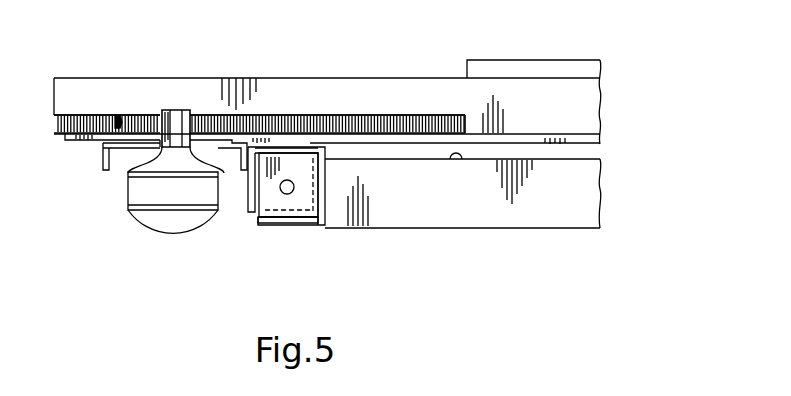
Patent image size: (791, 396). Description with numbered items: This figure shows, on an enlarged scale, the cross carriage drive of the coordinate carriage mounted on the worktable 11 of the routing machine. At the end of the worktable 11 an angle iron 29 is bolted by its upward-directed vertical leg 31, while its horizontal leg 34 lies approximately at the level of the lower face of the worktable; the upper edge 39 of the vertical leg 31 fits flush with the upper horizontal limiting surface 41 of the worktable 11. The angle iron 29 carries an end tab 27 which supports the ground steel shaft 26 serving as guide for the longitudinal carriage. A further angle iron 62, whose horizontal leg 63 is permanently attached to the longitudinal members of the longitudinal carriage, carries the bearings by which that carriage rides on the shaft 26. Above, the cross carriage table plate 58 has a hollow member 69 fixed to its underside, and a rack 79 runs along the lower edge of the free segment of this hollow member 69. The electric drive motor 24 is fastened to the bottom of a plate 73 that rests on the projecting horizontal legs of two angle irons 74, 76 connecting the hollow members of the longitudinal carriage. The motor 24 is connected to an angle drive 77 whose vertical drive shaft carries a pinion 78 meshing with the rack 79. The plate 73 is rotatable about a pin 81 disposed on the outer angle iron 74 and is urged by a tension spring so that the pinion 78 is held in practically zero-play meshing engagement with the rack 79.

The worktable 11 is at (520, 210).
The electric drive motor 24 is at (176, 222).
The ground steel shaft 26 is at (287, 180).
The end tab 27 is at (297, 172).
The angle iron 29 is at (291, 226).
The vertical leg 31 is at (325, 188).
The horizontal leg 34 is at (272, 222).
The upper edge 39 is at (325, 148).
The upper horizontal limiting surface 41 is at (458, 160).
The cross carriage table plate 58 is at (562, 70).
The angle iron 62 is at (241, 203).
The horizontal leg 63 is at (300, 148).
The hollow member 69 is at (450, 95).
The plate 73 is at (142, 110).
The angle iron 74 is at (104, 167).
The angle iron 76 is at (236, 116).
The angle drive 77 is at (148, 208).
The pinion 78 is at (178, 110).
The rack 79 is at (82, 113).
The pin 81 is at (117, 116).